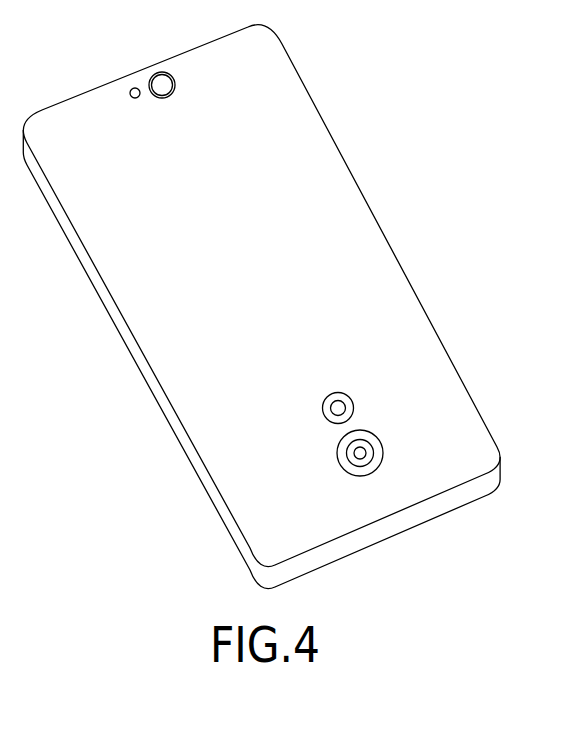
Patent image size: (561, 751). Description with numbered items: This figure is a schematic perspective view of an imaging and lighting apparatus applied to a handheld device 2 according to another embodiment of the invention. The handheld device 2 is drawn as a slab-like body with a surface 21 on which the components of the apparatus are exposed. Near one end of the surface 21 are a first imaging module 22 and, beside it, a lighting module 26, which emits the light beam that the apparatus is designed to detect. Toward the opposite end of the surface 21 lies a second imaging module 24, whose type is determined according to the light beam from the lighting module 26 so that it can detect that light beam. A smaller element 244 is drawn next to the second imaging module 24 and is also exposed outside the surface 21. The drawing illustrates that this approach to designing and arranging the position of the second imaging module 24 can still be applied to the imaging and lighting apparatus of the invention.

The handheld device 2 is at (429, 112).
The surface 21 is at (380, 265).
The first imaging module 22 is at (168, 87).
The lighting module 26 is at (135, 88).
The second imaging module 24 is at (360, 450).
The auxiliary lens 244 is at (338, 400).